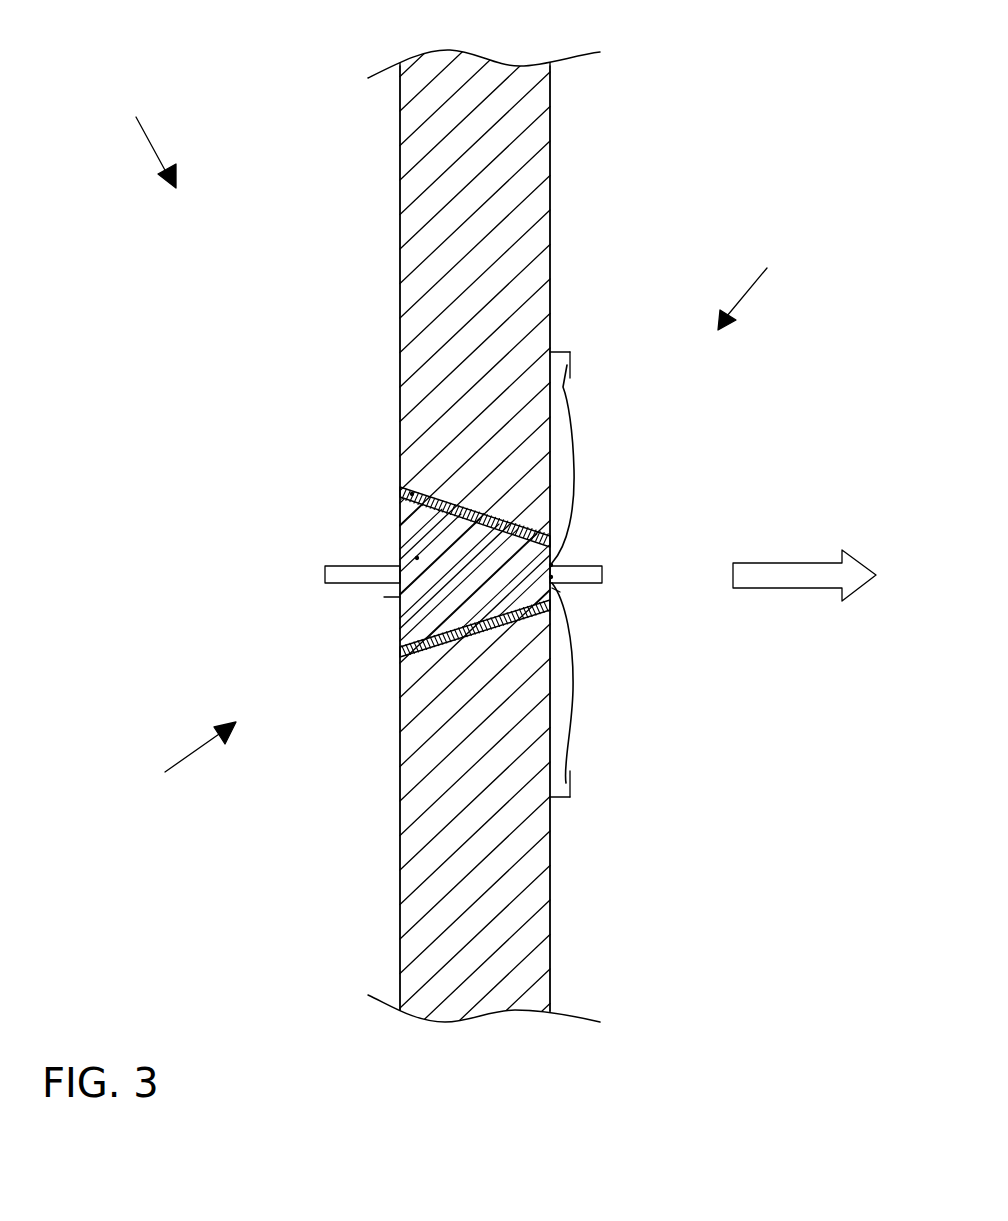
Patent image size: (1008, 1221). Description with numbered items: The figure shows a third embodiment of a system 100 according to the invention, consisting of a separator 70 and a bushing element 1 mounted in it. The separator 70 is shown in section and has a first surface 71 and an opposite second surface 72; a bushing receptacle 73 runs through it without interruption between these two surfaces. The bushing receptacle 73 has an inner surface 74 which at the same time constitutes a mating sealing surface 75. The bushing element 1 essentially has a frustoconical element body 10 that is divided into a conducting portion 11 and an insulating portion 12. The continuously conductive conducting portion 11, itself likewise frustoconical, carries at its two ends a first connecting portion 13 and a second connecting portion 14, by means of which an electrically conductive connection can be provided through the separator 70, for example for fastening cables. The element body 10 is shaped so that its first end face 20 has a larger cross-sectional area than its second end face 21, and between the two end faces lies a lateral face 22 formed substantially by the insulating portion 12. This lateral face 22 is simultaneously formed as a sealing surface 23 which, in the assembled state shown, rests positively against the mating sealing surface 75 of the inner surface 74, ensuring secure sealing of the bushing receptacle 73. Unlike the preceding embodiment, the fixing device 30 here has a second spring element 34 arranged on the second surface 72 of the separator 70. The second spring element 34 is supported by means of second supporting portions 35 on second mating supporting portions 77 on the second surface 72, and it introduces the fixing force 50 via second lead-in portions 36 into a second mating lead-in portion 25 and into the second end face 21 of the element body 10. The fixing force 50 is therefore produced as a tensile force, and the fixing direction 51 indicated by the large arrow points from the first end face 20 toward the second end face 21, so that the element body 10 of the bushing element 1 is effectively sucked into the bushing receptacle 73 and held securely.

The bushing element 1 is at (193, 756).
The system 100 is at (140, 141).
The separator 70 is at (505, 88).
The first surface 71 is at (400, 271).
The second surface 72 is at (551, 272).
The bushing receptacle 73 is at (492, 584).
The inner surface 74 is at (426, 653).
The mating sealing surface 75 is at (447, 632).
The second mating supporting portions 77 is at (561, 352).
The element body 10 is at (450, 511).
The conducting portion 11 is at (417, 558).
The insulating portion 12 is at (412, 494).
The first connecting portion 13 is at (339, 575).
The second connecting portion 14 is at (581, 572).
The first end face 20 is at (397, 596).
The second end face 21 is at (558, 592).
The lateral face 22 is at (426, 471).
The sealing surface 23 is at (455, 497).
The second mating lead-in portion 25 is at (551, 577).
The fixing device 30 is at (760, 286).
The second spring element 34 is at (573, 704).
The second supporting portions 35 is at (570, 362).
The second lead-in portions 36 is at (551, 565).
The fixing force 50 is at (804, 553).
The pull-out force 51 is at (825, 577).